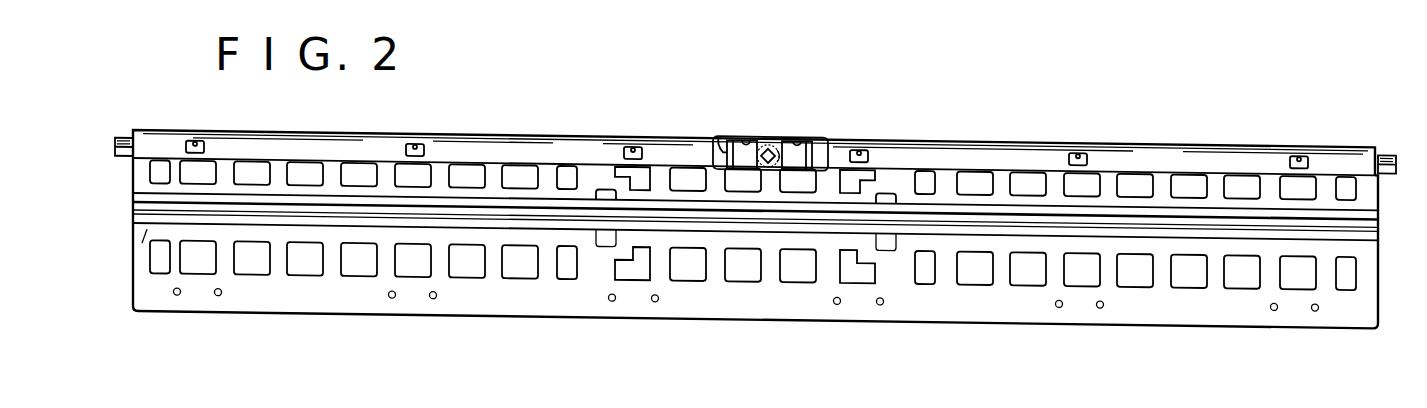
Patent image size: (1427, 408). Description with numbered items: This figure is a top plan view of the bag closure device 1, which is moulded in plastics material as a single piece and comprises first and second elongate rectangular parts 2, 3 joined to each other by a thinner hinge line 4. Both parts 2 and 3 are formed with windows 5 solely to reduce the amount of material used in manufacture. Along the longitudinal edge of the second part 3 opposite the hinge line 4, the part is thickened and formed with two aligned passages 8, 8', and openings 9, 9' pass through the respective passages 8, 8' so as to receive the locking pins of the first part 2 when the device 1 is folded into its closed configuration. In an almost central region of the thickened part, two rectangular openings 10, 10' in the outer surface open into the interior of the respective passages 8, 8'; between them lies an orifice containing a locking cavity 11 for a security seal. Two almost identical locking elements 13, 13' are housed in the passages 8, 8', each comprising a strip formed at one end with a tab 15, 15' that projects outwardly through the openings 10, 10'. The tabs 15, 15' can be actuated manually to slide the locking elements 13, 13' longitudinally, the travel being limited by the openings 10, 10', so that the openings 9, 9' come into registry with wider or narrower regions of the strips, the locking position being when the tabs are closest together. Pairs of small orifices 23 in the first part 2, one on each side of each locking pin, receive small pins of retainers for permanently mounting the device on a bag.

The closure device 1 is at (546, 121).
The first elongate rectangular part 2 is at (292, 296).
The second elongate rectangular part 3 is at (136, 247).
The hinge line 4 is at (142, 203).
The windows 5 is at (972, 279).
The passage 8 is at (1376, 136).
The passage 8' is at (116, 109).
The openings 9 is at (1079, 131).
The openings 9' is at (408, 124).
The rectangular opening 10 is at (798, 117).
The rectangular opening 10' is at (732, 117).
The locking cavity 11 is at (766, 148).
The locking element 13 is at (1397, 196).
The locking element 13' is at (132, 119).
The tab 15 is at (783, 124).
The tab 15' is at (699, 132).
The small orifices 23 is at (392, 300).